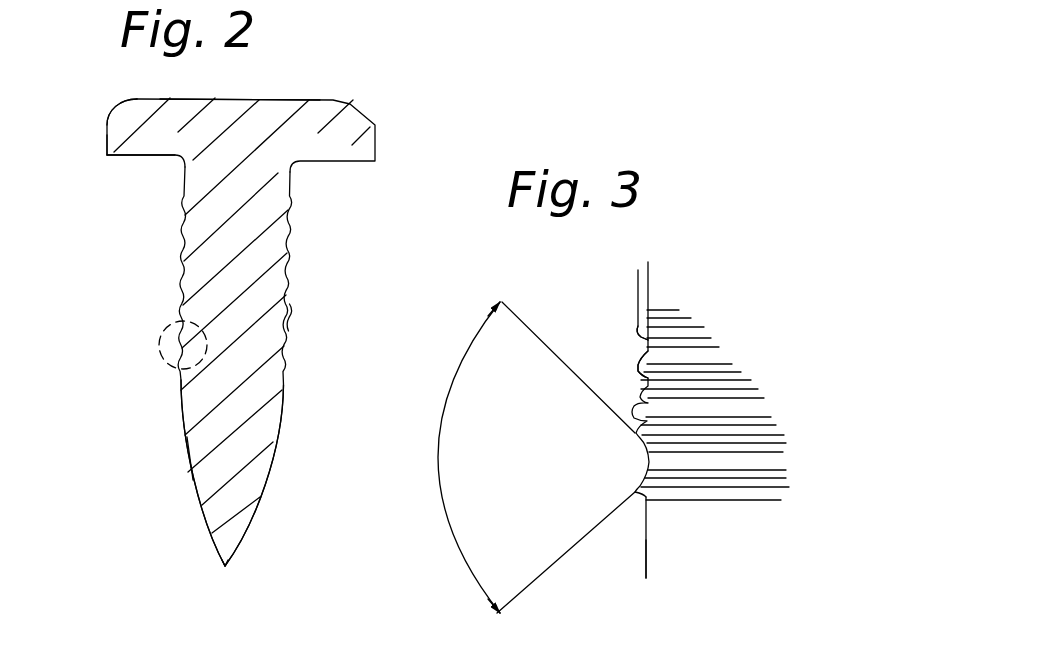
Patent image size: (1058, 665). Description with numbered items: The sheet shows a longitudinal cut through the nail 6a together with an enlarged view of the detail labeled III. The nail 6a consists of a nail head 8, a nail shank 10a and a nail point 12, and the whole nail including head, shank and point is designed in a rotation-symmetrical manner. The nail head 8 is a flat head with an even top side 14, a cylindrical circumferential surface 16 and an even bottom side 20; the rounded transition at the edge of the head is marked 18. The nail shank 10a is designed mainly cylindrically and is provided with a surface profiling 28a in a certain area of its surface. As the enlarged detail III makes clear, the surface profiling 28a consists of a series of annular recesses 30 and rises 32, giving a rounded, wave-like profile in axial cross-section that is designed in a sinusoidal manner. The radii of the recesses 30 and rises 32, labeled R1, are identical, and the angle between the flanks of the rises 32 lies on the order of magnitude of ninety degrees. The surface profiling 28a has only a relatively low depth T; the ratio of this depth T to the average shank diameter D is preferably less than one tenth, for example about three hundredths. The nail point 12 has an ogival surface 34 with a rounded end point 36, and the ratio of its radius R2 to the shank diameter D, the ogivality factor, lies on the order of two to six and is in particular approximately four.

In FIG. 2, the nail 6a is at (357, 247).
In FIG. 2, the nail head 8 is at (322, 110).
In FIG. 2, the nail shank 10a is at (272, 265).
In FIG. 3, the nail shank 10a is at (723, 408).
In FIG. 2, the nail point 12 is at (233, 503).
In FIG. 3, the nail point 12 is at (668, 563).
In FIG. 2, the top side 14 is at (252, 98).
In FIG. 2, the cylindrical circumferential surface 16 is at (108, 137).
In FIG. 2, the rounded head edge 18 is at (118, 112).
In FIG. 2, the bottom side 20 is at (123, 158).
In FIG. 2, the surface profiling 28a is at (291, 330).
In FIG. 3, the surface profiling 28a is at (662, 392).
In FIG. 3, the annular recesses 30 is at (645, 355).
In FIG. 3, the rises 32 is at (640, 381).
In FIG. 2, the ogival surface 34 is at (192, 483).
In FIG. 2, the rounded end point 36 is at (224, 568).
In FIG. 2, the detail III is at (155, 352).
In FIG. 3, the radius of the recesses and rises R1 is at (635, 433).
In FIG. 2, the radius of the ogival surface R2 is at (273, 458).
In FIG. 3, the depth of the surface profiling T is at (597, 290).
In FIG. 3, the shank diameter D is at (646, 532).